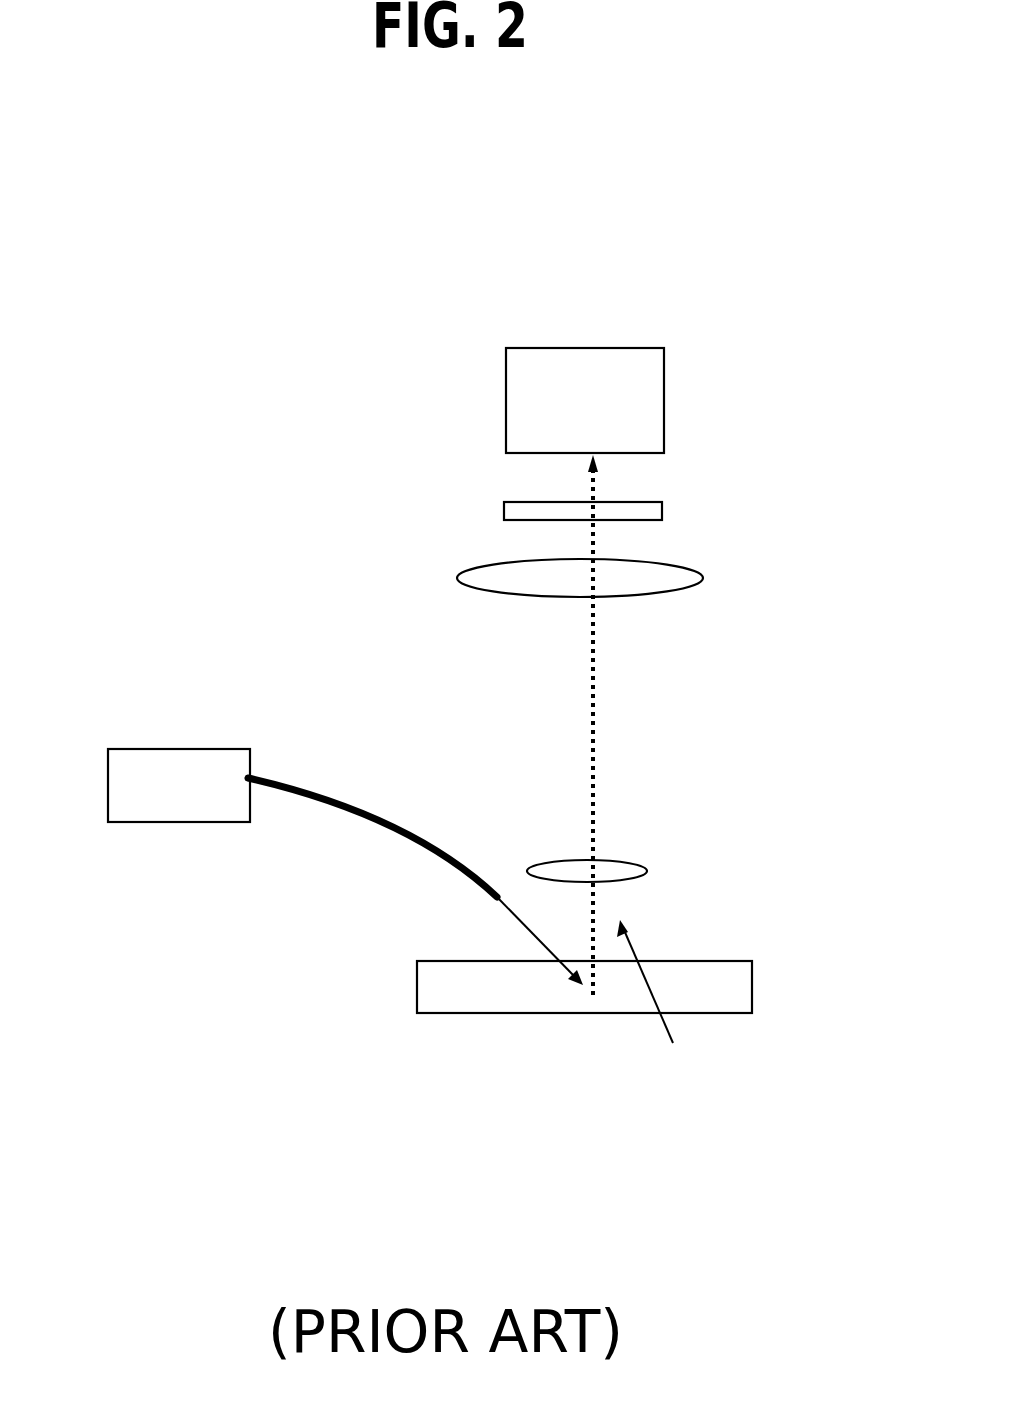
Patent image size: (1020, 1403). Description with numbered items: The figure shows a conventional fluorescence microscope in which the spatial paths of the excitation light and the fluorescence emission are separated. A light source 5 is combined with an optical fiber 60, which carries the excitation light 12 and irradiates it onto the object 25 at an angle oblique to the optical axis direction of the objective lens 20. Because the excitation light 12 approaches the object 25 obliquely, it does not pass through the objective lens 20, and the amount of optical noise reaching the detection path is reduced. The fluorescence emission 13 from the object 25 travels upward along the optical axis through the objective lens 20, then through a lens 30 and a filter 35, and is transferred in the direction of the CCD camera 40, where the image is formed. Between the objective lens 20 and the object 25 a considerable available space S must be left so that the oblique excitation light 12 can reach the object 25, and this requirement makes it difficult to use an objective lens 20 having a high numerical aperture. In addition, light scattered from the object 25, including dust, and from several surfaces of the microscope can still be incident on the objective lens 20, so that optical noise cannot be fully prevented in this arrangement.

The light source 5 is at (195, 753).
The optical fiber 60 is at (330, 812).
The excitation light 12 is at (527, 937).
The objective lens 20 is at (565, 870).
The object 25 is at (668, 970).
The available space S is at (653, 996).
The fluorescence emission 13 is at (600, 646).
The collecting lens 30 is at (500, 572).
The filter 35 is at (640, 502).
The CCD camera 40 is at (653, 408).